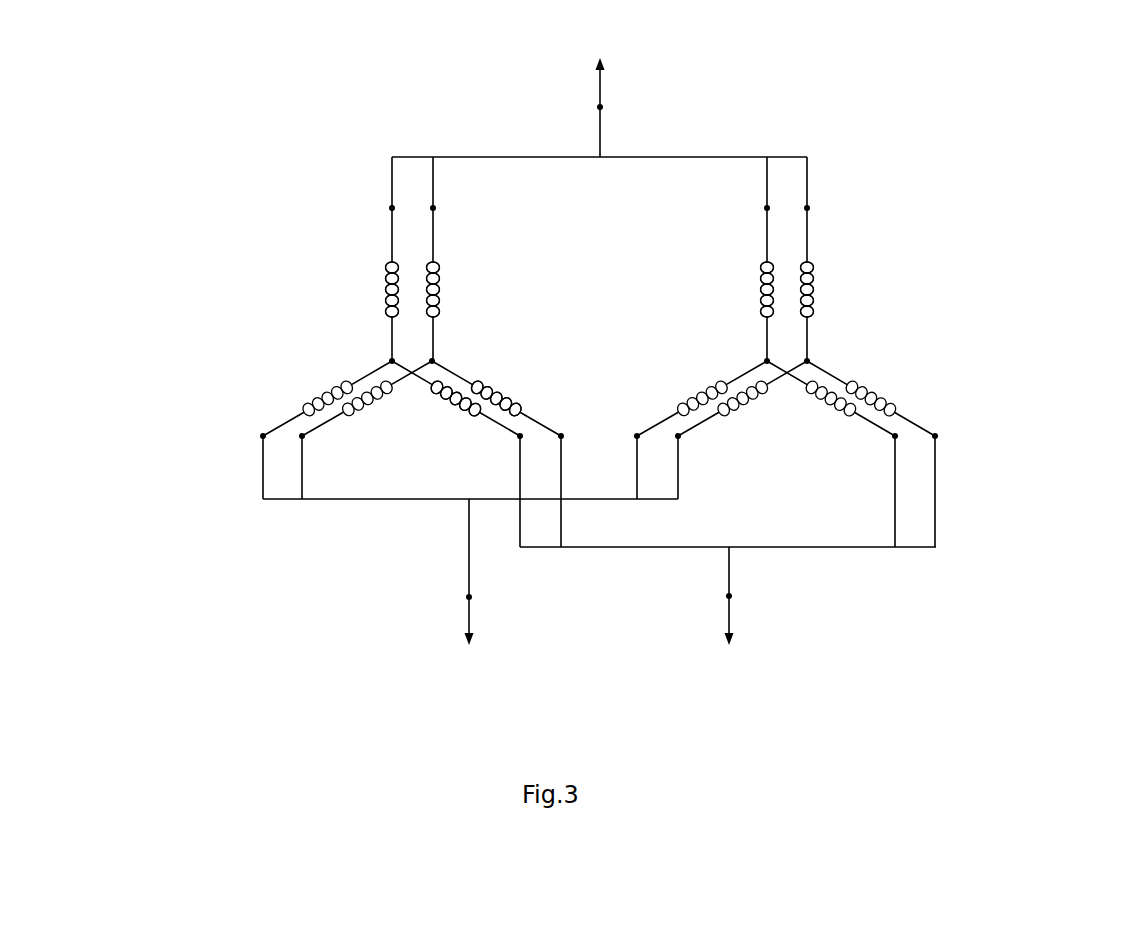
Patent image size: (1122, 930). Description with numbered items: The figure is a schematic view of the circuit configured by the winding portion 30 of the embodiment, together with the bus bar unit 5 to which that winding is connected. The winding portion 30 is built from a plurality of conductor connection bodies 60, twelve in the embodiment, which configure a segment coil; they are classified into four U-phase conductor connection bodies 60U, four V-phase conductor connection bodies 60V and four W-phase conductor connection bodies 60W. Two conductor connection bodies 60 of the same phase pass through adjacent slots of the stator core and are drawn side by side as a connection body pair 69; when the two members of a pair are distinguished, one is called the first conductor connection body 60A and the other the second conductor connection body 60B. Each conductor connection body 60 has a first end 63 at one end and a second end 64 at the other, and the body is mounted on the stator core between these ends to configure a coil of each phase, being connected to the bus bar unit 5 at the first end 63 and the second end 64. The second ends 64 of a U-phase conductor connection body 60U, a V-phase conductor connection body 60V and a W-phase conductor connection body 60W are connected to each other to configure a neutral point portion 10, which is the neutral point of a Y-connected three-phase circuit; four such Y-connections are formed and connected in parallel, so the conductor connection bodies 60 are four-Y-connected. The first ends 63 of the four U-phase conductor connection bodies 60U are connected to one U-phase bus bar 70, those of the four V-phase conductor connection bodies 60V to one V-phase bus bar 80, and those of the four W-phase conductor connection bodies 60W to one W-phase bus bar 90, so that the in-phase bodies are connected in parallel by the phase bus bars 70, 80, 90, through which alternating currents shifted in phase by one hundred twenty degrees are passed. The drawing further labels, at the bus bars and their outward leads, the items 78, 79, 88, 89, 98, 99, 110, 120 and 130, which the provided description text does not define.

The bus bar unit 5 is at (852, 122).
The winding portion 30 is at (968, 311).
The neutral point portion 10 is at (390, 361).
The conductor connection body 60 is at (603, 364).
The U-phase conductor connection body 60U is at (433, 258).
The V-phase conductor connection body 60V is at (352, 384).
The W-phase conductor connection body 60W is at (454, 380).
The first conductor connection body 60A is at (427, 318).
The second conductor connection body 60B is at (384, 290).
The first end 63 is at (806, 210).
The second end 64 is at (805, 360).
The connection body pair 69 is at (232, 205).
The U-phase bus bar 70 is at (730, 150).
The U-phase terminal connection point 78 is at (603, 107).
The U-phase bus bar connection portion 79 is at (768, 207).
The V-phase bus bar 80 is at (351, 505).
The V-phase terminal connection point 88 is at (466, 597).
The V-phase bus bar connection portion 89 is at (300, 447).
The W-phase bus bar 90 is at (855, 555).
The W-phase terminal connection point 98 is at (733, 596).
The W-phase bus bar connection portion 99 is at (898, 445).
The U-phase terminal 110 is at (606, 89).
The V-phase terminal 120 is at (462, 616).
The W-phase terminal 130 is at (737, 615).